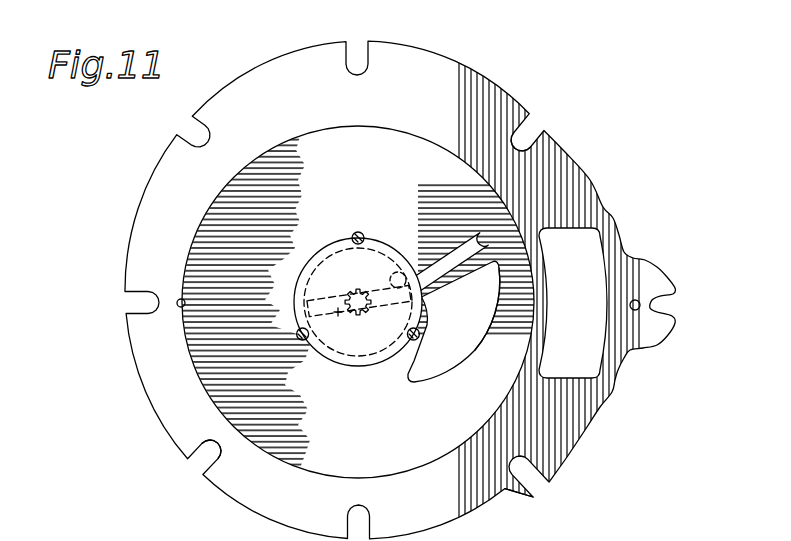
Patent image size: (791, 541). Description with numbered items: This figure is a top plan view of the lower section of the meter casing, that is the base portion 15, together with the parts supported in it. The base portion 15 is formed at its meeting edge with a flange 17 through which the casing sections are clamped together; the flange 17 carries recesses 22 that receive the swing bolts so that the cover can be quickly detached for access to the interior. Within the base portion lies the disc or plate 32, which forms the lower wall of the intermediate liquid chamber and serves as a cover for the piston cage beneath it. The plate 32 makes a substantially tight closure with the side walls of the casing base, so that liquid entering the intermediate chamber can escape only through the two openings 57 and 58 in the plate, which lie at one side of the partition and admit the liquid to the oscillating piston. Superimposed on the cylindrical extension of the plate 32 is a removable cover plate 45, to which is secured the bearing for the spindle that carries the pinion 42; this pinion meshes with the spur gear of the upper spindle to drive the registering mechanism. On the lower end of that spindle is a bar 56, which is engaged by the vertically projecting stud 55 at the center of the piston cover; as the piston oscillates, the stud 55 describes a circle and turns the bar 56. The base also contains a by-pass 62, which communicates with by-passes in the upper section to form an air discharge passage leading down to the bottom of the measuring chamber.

The base portion 15 is at (505, 489).
The flange 17 is at (456, 65).
The recess 22 is at (530, 124).
The disc or plate 32 is at (358, 302).
The pinion 42 is at (362, 288).
The removable cover plate 45 is at (388, 340).
The stud 55 is at (402, 262).
The bar 56 is at (338, 321).
The opening 57 is at (472, 332).
The opening 58 is at (447, 260).
The by-pass 62 is at (583, 255).